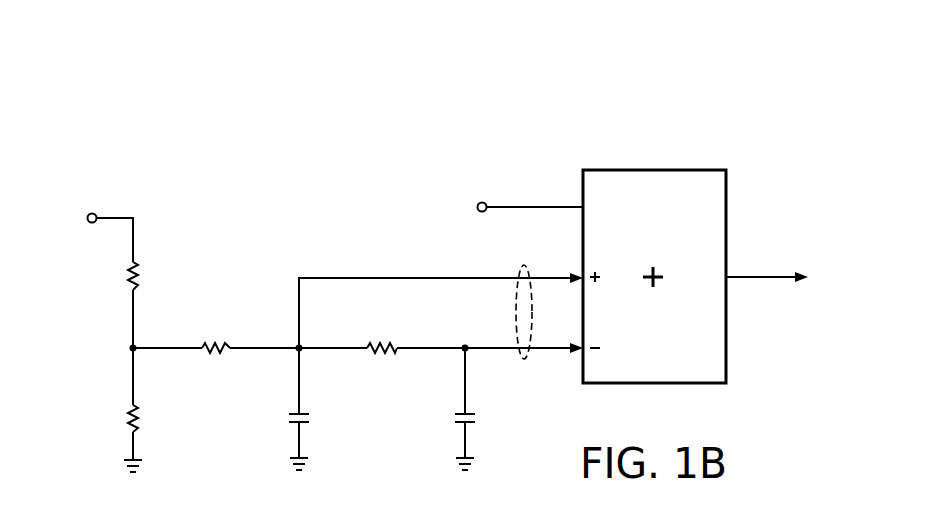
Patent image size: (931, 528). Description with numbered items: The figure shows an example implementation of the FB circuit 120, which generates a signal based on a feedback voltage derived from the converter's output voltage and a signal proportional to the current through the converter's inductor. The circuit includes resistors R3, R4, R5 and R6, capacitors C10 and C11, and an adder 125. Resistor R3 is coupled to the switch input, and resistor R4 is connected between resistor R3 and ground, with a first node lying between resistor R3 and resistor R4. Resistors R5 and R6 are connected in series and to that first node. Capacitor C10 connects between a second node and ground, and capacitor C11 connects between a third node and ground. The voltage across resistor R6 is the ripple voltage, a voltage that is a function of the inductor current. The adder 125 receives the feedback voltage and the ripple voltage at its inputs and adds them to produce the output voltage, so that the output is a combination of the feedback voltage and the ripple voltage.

The FB circuit 120 is at (170, 80).
The adder 125 is at (652, 170).
The resistor R3 is at (117, 276).
The resistor R4 is at (117, 418).
The resistor R5 is at (216, 336).
The resistor R6 is at (382, 336).
The capacitor C10 is at (277, 403).
The capacitor C11 is at (443, 403).